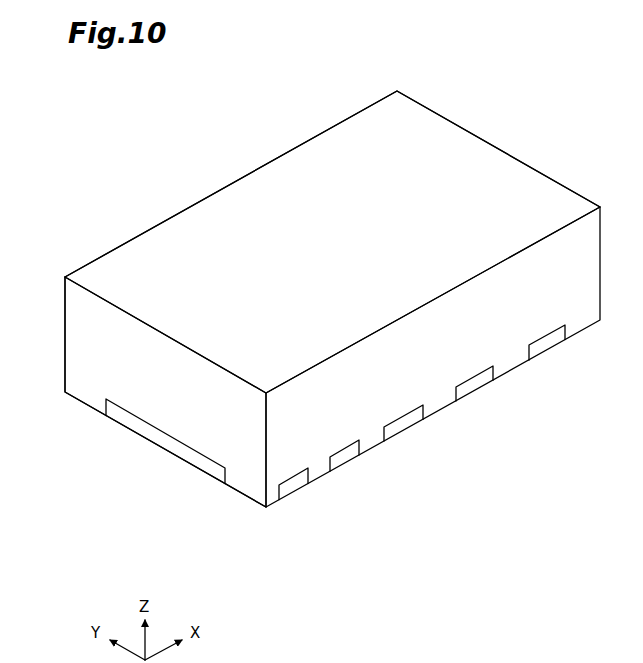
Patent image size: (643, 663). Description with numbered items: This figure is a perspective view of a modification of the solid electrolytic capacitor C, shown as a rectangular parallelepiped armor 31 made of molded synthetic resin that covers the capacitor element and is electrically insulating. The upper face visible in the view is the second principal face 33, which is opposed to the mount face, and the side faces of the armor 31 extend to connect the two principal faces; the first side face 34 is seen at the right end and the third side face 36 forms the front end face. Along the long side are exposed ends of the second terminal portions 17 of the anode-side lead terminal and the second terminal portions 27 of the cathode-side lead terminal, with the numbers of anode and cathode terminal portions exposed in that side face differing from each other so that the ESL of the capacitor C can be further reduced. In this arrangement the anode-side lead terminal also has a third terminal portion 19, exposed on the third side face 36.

The armor 31 is at (428, 107).
The second principal face 33 is at (303, 195).
The first side face 34 is at (532, 322).
The third side face 36 is at (168, 415).
The third terminal portion 19 is at (200, 460).
The second terminal portion 17 is at (293, 486).
The second terminal portion 27 is at (403, 423).
The solid electrolytic capacitor C is at (515, 95).